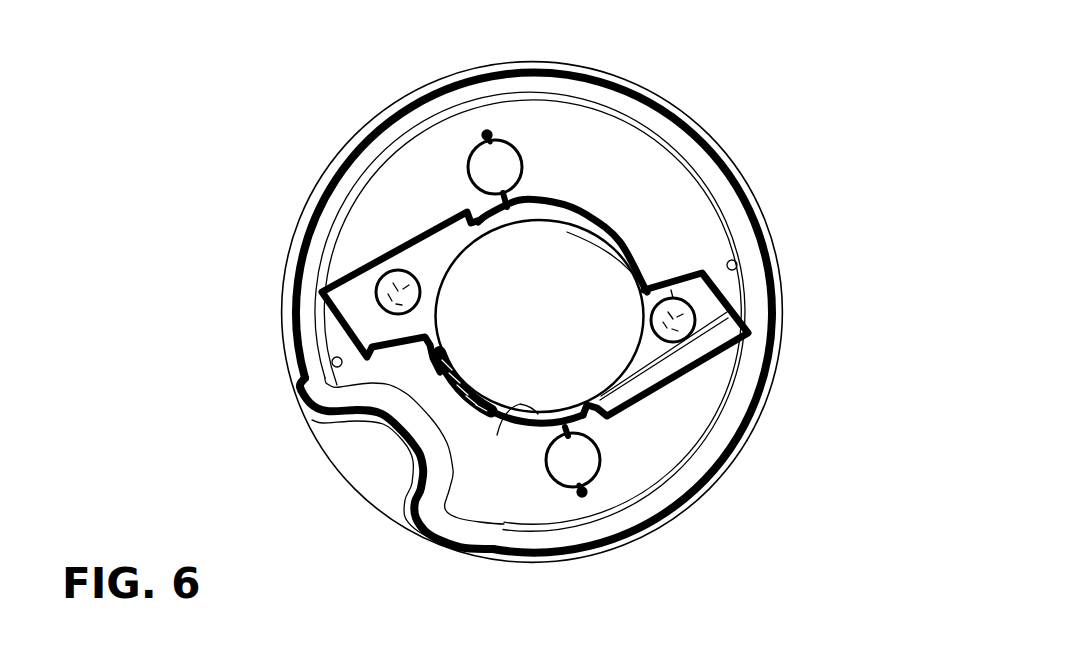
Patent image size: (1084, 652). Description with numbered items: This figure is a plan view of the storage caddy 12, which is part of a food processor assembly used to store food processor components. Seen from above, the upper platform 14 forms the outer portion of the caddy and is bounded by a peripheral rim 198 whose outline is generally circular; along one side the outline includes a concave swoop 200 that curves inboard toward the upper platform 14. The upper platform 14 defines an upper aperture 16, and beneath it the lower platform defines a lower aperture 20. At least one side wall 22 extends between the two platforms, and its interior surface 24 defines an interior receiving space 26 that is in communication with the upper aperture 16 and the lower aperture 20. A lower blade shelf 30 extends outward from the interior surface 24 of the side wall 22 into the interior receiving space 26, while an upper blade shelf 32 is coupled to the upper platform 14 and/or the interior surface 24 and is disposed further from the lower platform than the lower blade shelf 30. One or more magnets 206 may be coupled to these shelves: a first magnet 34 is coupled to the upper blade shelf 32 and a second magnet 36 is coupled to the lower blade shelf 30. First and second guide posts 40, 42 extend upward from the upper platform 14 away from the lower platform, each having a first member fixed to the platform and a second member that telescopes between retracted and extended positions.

The storage caddy 12 is at (815, 99).
The upper platform 14 is at (660, 450).
The upper aperture 16 is at (480, 350).
The lower aperture 20 is at (569, 350).
The side wall 22 is at (558, 224).
The interior surface 24 is at (517, 409).
The interior receiving space 26 is at (530, 297).
The lower blade shelf 30 is at (358, 280).
The upper blade shelf 32 is at (670, 363).
The first magnet 34 is at (672, 315).
The second magnet 36 is at (395, 284).
The first guide post 40 is at (604, 463).
The second guide post 42 is at (470, 156).
The peripheral rim 198 is at (763, 455).
The concave swoop 200 is at (400, 433).
The magnets 206 is at (332, 362).